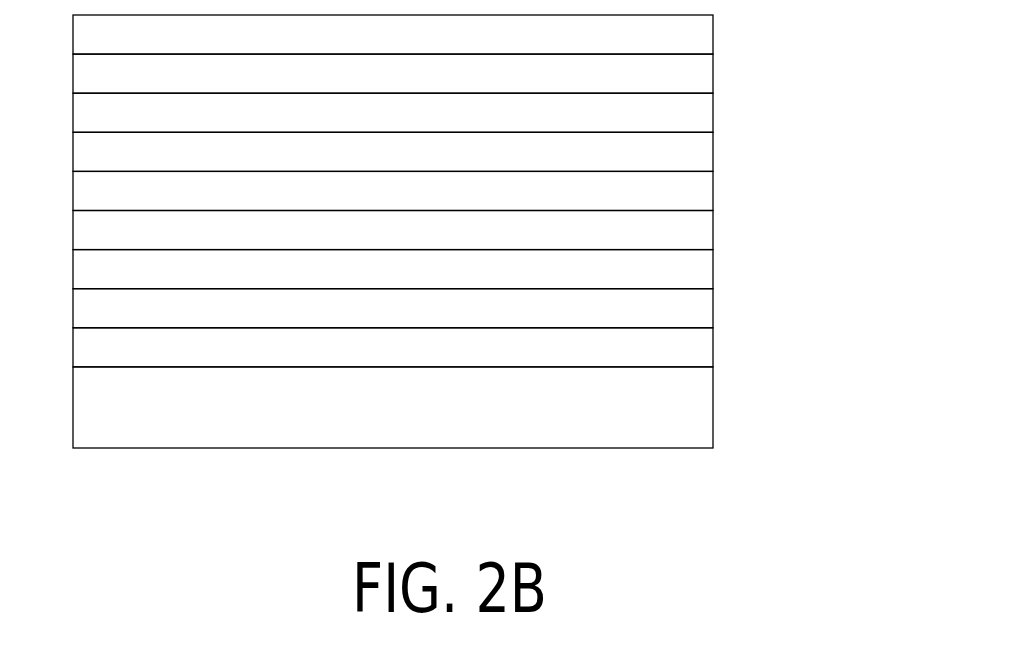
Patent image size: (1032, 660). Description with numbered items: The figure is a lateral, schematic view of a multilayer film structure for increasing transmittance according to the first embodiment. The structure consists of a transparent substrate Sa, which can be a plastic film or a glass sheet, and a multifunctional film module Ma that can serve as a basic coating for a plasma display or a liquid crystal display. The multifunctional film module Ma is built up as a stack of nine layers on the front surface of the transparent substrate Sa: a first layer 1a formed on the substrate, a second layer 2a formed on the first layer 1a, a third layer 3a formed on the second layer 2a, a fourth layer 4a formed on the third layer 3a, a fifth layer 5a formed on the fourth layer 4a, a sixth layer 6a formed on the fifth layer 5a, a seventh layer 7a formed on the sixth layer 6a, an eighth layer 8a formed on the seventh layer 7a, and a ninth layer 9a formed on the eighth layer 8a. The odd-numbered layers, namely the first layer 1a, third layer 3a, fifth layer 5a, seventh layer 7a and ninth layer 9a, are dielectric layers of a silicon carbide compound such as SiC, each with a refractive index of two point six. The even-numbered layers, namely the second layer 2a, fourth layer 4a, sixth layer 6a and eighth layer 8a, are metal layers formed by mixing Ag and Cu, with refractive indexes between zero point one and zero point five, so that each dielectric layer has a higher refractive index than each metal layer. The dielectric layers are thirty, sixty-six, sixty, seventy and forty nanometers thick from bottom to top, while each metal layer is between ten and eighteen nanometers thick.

The ninth layer 9a is at (693, 42).
The eighth layer 8a is at (693, 81).
The seventh layer 7a is at (693, 121).
The sixth layer 6a is at (693, 160).
The fifth layer 5a is at (693, 200).
The fourth layer 4a is at (693, 239).
The third layer 3a is at (693, 278).
The second layer 2a is at (693, 318).
The first layer 1a is at (448, 350).
The multifunctional film module Ma is at (490, 194).
The transparent substrate Sa is at (693, 417).